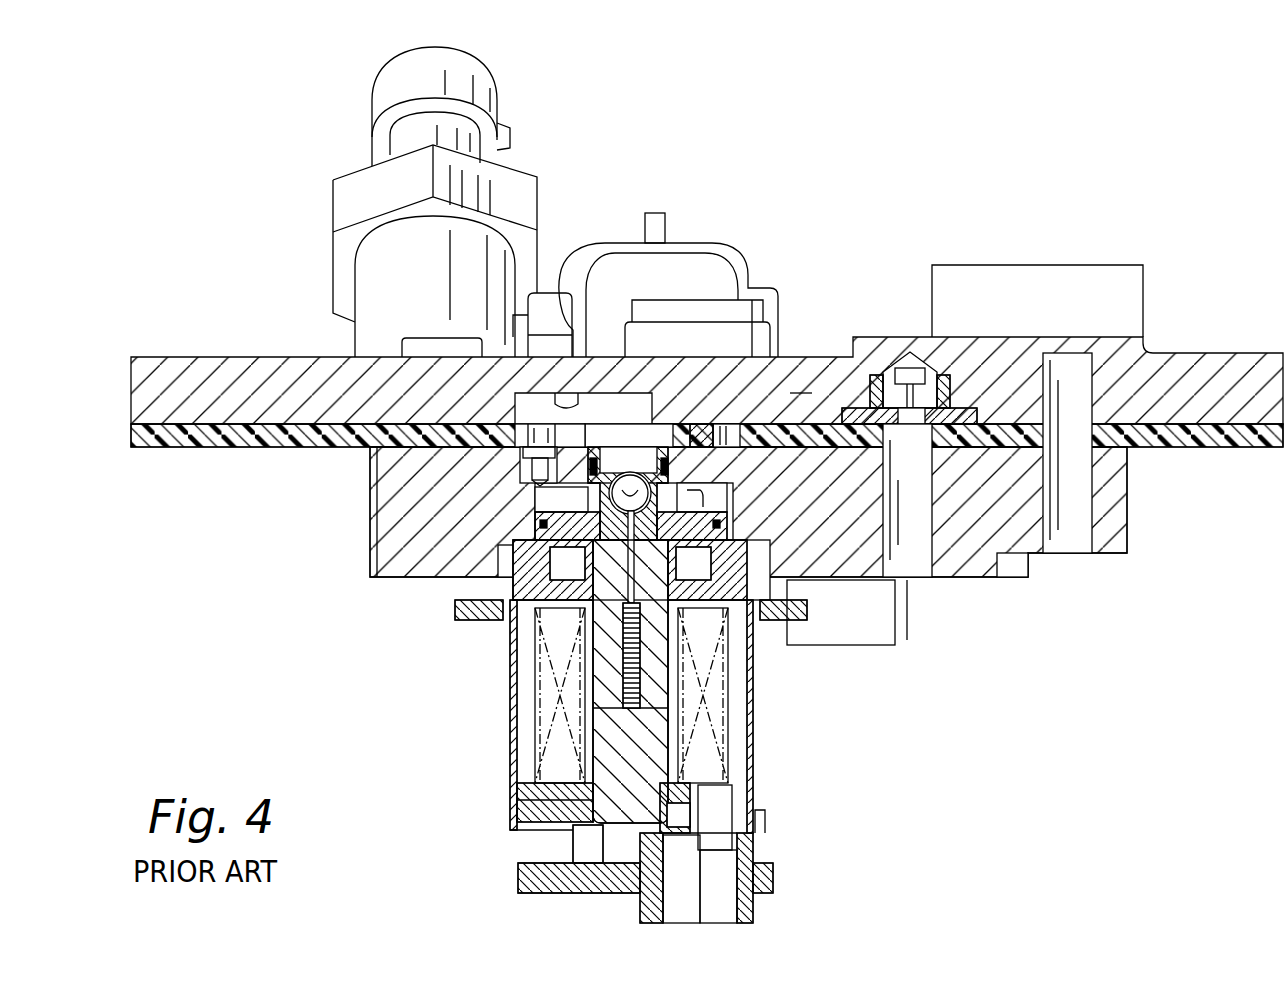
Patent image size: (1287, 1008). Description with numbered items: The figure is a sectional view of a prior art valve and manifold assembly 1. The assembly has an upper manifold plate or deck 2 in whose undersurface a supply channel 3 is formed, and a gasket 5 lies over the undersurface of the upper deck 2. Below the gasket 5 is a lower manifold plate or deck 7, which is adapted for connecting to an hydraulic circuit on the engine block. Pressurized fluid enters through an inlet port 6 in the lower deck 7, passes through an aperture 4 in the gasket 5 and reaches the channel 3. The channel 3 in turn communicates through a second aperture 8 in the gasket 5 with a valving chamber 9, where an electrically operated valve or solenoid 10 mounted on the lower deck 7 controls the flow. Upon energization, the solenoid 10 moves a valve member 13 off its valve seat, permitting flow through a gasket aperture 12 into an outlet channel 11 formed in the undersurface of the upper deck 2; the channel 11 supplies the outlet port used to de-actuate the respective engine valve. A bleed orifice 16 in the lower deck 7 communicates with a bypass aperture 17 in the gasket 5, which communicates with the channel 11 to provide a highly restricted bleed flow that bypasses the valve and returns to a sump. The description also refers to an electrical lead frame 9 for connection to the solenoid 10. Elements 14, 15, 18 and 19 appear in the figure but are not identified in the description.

The valve and manifold assembly 1 is at (954, 144).
The upper manifold plate or deck 2 is at (1243, 353).
The channel 3 is at (795, 393).
The aperture 4 is at (907, 580).
The gasket 5 is at (1218, 446).
The inlet port 6 is at (925, 540).
The lower manifold plate or deck 7 is at (370, 532).
The second aperture 8 is at (715, 425).
The valving chamber 9 is at (713, 422).
The electrically operated valve 10 is at (510, 712).
The channel 11 is at (587, 395).
The gasket aperture 12 is at (612, 420).
The valve member 13 is at (599, 485).
The seat 14 is at (733, 483).
The seal 15 is at (943, 405).
The bleed orifice 16 is at (535, 485).
The bypass aperture 17 is at (523, 447).
The electrical connector 18 is at (318, 161).
The flange 19 is at (768, 827).